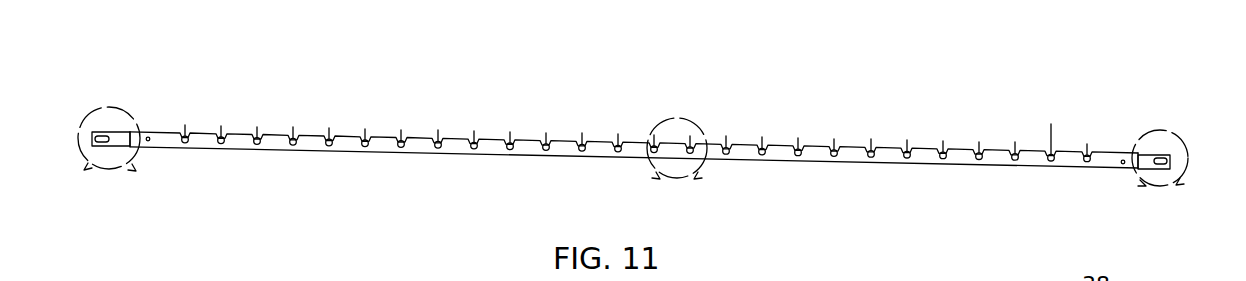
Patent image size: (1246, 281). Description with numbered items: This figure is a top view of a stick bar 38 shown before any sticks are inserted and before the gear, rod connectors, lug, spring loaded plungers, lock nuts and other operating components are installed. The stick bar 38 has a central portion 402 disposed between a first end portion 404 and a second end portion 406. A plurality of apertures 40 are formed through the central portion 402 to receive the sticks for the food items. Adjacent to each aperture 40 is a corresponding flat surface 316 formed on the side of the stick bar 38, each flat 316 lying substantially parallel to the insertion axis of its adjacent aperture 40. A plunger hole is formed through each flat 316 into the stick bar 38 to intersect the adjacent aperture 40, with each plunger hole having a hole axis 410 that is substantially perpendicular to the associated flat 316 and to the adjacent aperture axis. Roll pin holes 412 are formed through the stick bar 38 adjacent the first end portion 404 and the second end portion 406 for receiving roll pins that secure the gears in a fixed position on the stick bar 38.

The stick bar 38 is at (1052, 90).
The aperture 40 is at (298, 150).
The flat surface 316 is at (442, 140).
The central portion 402 is at (781, 132).
The first end portion 404 is at (108, 127).
The second end portion 406 is at (1153, 128).
The hole axis 410 is at (332, 130).
The roll pin hole 412 is at (150, 135).